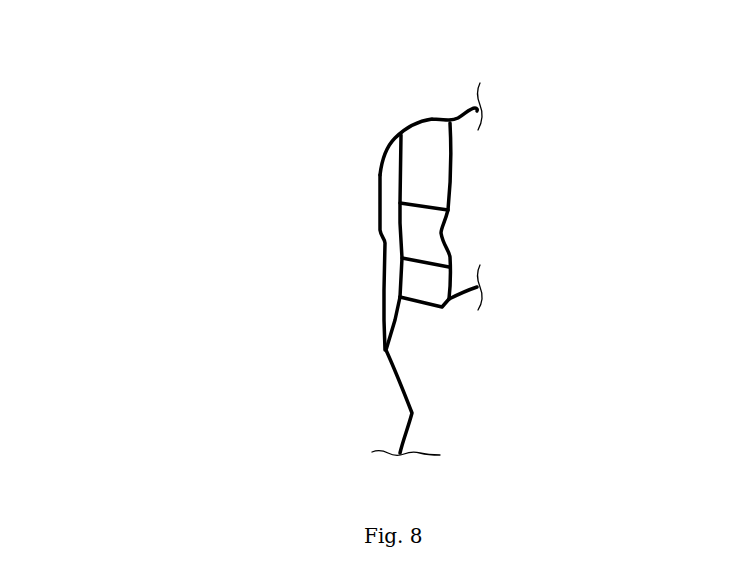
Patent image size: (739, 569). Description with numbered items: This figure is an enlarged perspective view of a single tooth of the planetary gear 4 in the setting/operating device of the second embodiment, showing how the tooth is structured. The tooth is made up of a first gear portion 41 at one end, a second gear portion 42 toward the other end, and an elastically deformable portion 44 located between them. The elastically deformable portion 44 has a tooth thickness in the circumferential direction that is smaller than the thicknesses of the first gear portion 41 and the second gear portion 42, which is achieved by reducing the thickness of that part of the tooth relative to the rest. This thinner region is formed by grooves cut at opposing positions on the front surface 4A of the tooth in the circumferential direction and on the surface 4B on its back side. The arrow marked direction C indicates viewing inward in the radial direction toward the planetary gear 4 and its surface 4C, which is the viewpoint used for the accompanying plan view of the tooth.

The planetary gear 4 is at (565, 38).
The front surface 4A is at (437, 147).
The first gear portion 41 is at (410, 118).
The surface 4C is at (392, 168).
The elastically deformable portion 44 is at (407, 242).
The second gear portion 42 is at (400, 291).
The surface on the back side 4B is at (383, 320).
The direction C is at (244, 238).